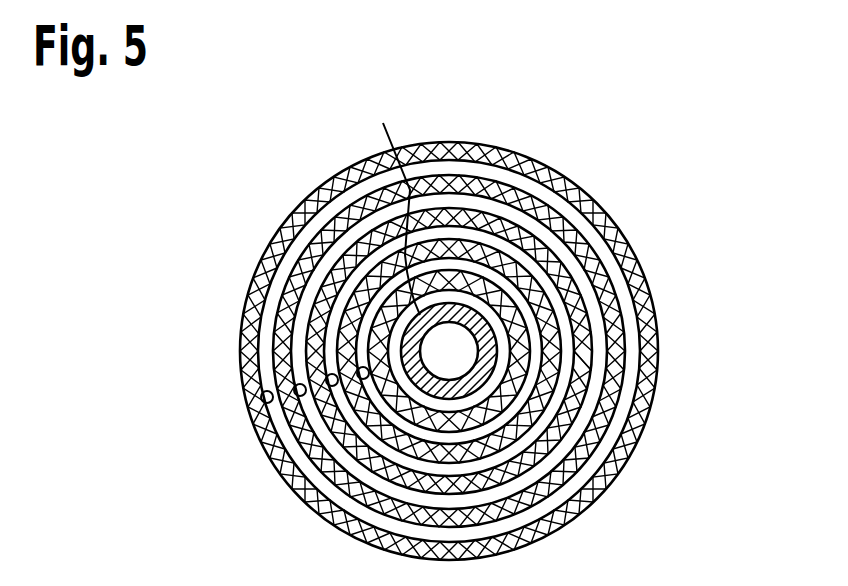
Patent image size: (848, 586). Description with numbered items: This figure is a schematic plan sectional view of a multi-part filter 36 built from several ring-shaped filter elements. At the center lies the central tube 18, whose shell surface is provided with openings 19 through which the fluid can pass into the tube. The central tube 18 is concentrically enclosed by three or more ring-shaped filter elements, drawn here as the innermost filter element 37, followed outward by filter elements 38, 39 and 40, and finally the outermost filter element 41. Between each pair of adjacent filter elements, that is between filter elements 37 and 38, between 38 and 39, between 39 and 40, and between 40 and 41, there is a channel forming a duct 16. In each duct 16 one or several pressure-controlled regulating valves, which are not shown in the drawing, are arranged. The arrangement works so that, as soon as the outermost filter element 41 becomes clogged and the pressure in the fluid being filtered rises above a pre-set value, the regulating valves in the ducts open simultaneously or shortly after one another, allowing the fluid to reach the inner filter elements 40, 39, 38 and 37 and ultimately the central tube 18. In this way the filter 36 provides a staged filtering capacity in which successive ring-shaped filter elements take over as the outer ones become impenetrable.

The filter 36 is at (726, 148).
The outermost filter element 41 is at (556, 180).
The ring-shaped filter element 40 is at (567, 218).
The ring-shaped filter element 39 is at (548, 267).
The ring-shaped filter element 38 is at (537, 297).
The ring-shaped filter element 37 is at (522, 316).
The central tube 18 is at (495, 340).
The openings 19 is at (386, 202).
The duct 16 is at (262, 392).